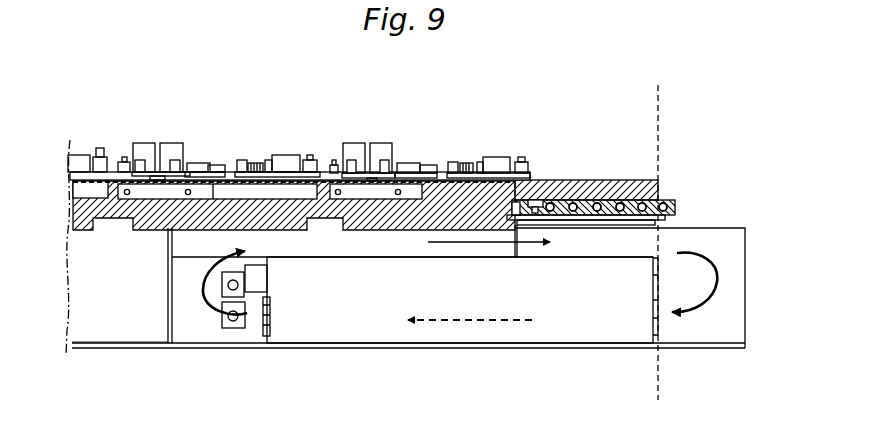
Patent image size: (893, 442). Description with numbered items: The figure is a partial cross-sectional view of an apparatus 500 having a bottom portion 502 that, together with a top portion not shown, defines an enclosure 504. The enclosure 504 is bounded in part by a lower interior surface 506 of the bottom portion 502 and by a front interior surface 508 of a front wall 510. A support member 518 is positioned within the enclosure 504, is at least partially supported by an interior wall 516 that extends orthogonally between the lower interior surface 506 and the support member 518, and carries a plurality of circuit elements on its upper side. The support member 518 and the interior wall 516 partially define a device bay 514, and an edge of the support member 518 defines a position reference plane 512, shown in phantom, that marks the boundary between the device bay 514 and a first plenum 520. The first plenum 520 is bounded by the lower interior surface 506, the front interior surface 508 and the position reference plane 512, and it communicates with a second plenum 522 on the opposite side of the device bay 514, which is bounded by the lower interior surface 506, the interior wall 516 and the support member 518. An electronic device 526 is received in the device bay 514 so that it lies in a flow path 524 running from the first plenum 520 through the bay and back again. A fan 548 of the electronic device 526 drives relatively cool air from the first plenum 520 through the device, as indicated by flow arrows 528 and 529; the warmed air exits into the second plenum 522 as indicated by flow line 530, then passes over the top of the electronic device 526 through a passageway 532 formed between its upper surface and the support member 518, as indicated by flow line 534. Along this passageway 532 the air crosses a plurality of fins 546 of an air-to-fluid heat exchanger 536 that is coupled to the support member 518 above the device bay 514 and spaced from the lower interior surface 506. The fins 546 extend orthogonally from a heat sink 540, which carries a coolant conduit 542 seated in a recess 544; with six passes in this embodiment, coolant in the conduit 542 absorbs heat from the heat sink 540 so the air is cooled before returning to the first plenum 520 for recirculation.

The apparatus 500 is at (114, 122).
The bottom portion 502 is at (452, 344).
The enclosure 504 is at (222, 139).
The lower interior surface 506 is at (155, 341).
The front interior surface 508 is at (743, 287).
The front wall 510 is at (745, 307).
The position reference plane 512 is at (660, 150).
The device bay 514 is at (297, 325).
The interior wall 516 is at (170, 279).
The support member 518 is at (289, 200).
The first plenum 520 is at (700, 294).
The second plenum 522 is at (210, 329).
The flow path 524 is at (187, 343).
The electronic device 526 is at (478, 300).
The flow arrow 528 is at (715, 296).
The flow arrow 529 is at (532, 320).
The flow line 530 is at (206, 291).
The passageway 532 is at (385, 255).
The flow line 534 is at (458, 242).
The air-to-fluid heat exchanger 536 is at (583, 194).
The heat sink 540 is at (607, 180).
The coolant conduit 542 is at (616, 180).
The recess 544 is at (667, 201).
The plurality of fins 546 is at (597, 233).
The fan 548 is at (658, 321).